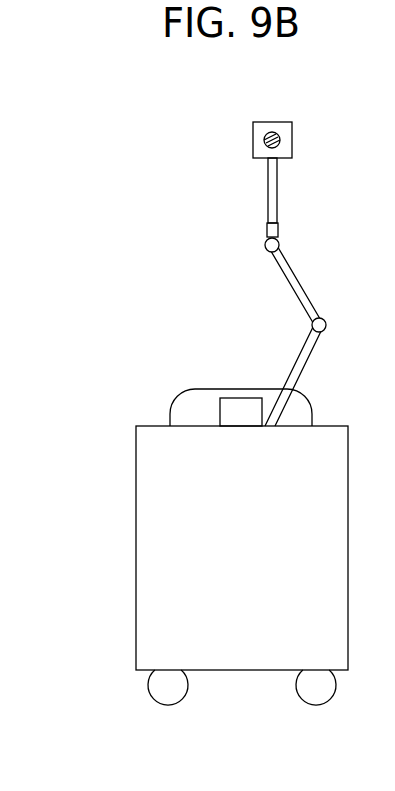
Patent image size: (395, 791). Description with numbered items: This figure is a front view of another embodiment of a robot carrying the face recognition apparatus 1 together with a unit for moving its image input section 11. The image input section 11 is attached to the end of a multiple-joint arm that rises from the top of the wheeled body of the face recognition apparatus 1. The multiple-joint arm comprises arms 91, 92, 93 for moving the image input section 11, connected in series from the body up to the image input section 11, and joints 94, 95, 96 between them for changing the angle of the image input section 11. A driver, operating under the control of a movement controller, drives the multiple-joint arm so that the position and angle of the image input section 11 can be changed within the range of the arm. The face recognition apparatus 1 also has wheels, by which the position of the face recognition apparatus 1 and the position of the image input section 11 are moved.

The face recognition apparatus 1 is at (132, 412).
The image input section 11 is at (272, 121).
The arm 91 is at (307, 363).
The arm 92 is at (298, 282).
The arm 93 is at (272, 197).
The joint 94 is at (311, 327).
The joint 95 is at (280, 247).
The joint 96 is at (266, 236).